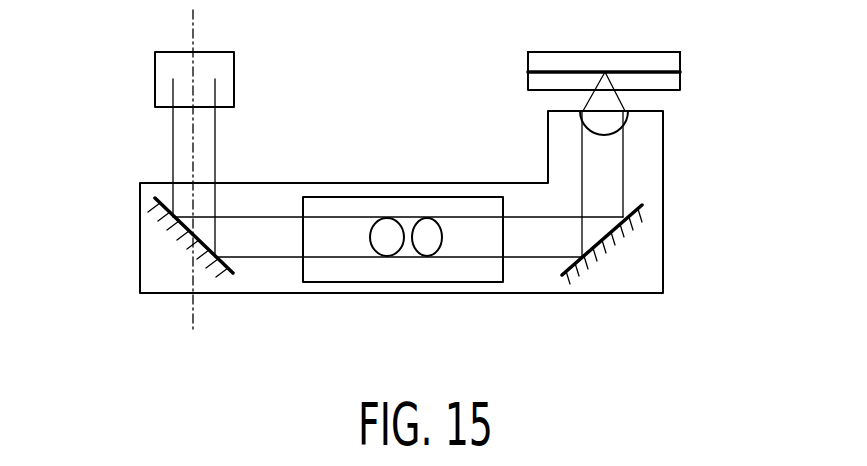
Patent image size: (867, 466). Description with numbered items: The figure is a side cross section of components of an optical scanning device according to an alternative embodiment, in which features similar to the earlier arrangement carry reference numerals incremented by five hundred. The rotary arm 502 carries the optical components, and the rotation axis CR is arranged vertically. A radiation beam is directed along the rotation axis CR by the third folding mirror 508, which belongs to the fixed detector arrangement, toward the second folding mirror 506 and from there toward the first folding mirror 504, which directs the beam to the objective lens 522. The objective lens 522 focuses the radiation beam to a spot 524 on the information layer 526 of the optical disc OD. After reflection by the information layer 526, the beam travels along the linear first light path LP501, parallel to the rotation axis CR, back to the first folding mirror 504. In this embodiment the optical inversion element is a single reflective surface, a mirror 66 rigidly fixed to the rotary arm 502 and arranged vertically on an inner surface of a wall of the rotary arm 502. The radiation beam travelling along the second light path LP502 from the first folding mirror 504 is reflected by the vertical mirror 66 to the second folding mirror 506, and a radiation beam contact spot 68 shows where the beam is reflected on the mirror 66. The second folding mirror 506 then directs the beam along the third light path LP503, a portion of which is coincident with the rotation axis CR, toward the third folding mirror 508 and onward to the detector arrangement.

The rotary arm 502 is at (263, 294).
The third folding mirror 508 is at (223, 63).
The rotation axis CR is at (196, 20).
The third light path LP503 is at (183, 141).
The second folding mirror 506 is at (178, 228).
The mirror 66 is at (463, 268).
The radiation beam contact spot 68 is at (405, 246).
The second light path LP502 is at (545, 243).
The first folding mirror 504 is at (632, 228).
The first light path LP501 is at (622, 166).
The objective lens 522 is at (605, 117).
The optical disc OD is at (658, 57).
The information layer 526 is at (672, 66).
The spot 524 is at (618, 77).